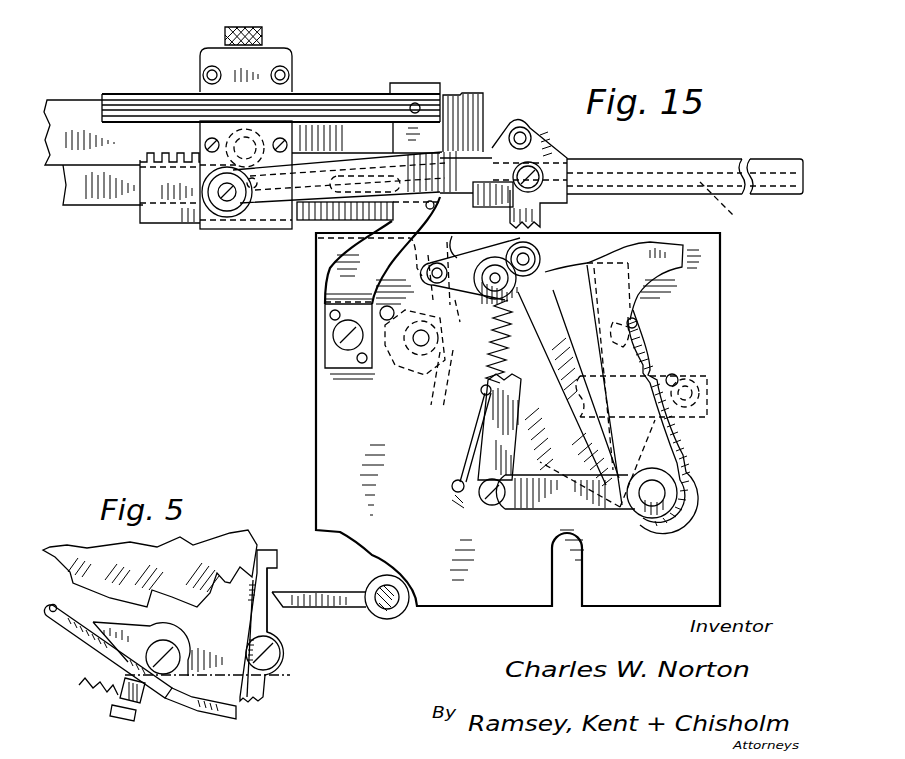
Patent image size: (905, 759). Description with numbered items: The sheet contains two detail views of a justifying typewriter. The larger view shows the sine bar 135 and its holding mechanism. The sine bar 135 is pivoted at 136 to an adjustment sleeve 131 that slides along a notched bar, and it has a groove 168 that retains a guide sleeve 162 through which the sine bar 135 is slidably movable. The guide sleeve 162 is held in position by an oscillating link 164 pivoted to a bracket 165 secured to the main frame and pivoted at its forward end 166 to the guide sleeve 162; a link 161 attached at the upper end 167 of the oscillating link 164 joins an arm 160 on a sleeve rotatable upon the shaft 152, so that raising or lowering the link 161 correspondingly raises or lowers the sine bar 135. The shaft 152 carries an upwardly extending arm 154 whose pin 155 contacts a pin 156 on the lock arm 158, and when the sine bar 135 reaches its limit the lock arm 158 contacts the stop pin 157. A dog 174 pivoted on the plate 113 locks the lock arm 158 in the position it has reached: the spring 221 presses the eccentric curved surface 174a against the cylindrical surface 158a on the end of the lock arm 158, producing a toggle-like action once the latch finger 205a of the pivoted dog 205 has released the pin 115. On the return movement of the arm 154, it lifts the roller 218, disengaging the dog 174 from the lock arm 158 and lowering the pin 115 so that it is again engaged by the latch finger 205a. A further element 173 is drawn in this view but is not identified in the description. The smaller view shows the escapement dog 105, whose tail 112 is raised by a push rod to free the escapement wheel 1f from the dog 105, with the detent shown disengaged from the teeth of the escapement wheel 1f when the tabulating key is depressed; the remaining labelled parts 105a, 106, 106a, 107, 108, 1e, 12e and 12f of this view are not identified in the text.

In FIG. 15, the forward end pivot 166 is at (521, 126).
In FIG. 15, the upper end 167 is at (538, 165).
In FIG. 15, the guide sleeve 162 is at (560, 183).
In FIG. 15, the sine bar 135 is at (663, 170).
In FIG. 15, the groove 168 is at (733, 205).
In FIG. 15, the roller 218 is at (543, 250).
In FIG. 15, the latch finger 205a is at (468, 234).
In FIG. 15, the dog 174 is at (493, 266).
In FIG. 15, the eccentric curved surface 174a is at (532, 280).
In FIG. 15, the pin 115 is at (438, 295).
In FIG. 15, the pawl 173 is at (470, 282).
In FIG. 15, the cylindrical surface 158a is at (545, 299).
In FIG. 15, the pin 156 is at (637, 320).
In FIG. 15, the pin 155 is at (652, 343).
In FIG. 15, the stop pin 157 is at (676, 375).
In FIG. 15, the arm 154 is at (657, 437).
In FIG. 15, the shaft 152 is at (655, 492).
In FIG. 15, the arm 160 is at (593, 507).
In FIG. 15, the link 161 is at (477, 488).
In FIG. 15, the lock arm 158 is at (562, 413).
In FIG. 15, the spring 221 is at (488, 380).
In FIG. 15, the pivoted dog 205 is at (413, 367).
In FIG. 15, the plate 113 is at (325, 466).
In FIG. 15, the bracket 165 is at (343, 164).
In FIG. 15, the oscillating link 164 is at (317, 192).
In FIG. 15, the adjustment sleeve 131 is at (259, 218).
In FIG. 15, the pivot 136 is at (228, 218).
In FIG. 5, the escapement wheel 1f is at (190, 545).
In FIG. 5, the lug 106a is at (278, 565).
In FIG. 5, the pivot 12e is at (378, 592).
In FIG. 5, the bar 106 is at (222, 611).
In FIG. 5, the link 12f is at (337, 608).
In FIG. 5, the hole 105a is at (58, 606).
In FIG. 5, the escapement dog 105 is at (103, 653).
In FIG. 5, the spring 108 is at (108, 697).
In FIG. 5, the screw 107 is at (138, 712).
In FIG. 5, the lug 1e is at (200, 672).
In FIG. 5, the tail 112 is at (240, 716).